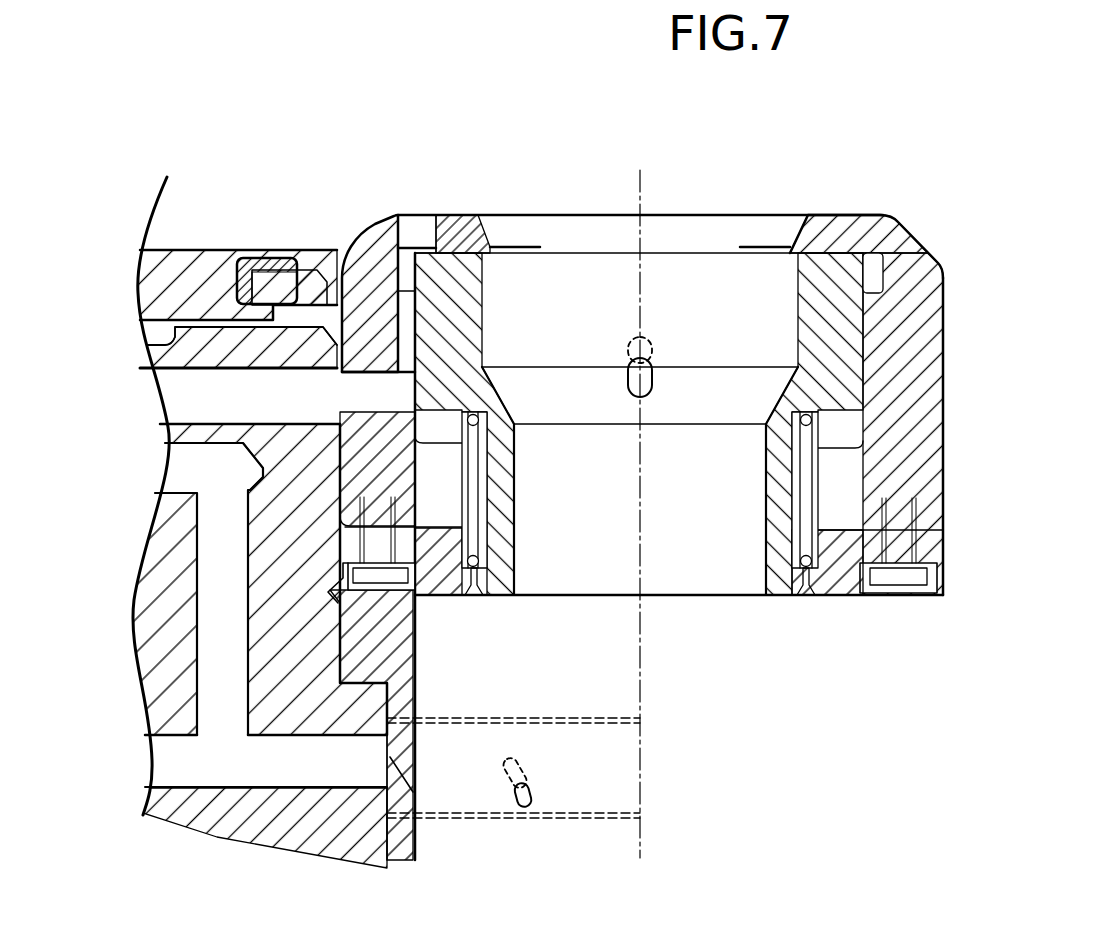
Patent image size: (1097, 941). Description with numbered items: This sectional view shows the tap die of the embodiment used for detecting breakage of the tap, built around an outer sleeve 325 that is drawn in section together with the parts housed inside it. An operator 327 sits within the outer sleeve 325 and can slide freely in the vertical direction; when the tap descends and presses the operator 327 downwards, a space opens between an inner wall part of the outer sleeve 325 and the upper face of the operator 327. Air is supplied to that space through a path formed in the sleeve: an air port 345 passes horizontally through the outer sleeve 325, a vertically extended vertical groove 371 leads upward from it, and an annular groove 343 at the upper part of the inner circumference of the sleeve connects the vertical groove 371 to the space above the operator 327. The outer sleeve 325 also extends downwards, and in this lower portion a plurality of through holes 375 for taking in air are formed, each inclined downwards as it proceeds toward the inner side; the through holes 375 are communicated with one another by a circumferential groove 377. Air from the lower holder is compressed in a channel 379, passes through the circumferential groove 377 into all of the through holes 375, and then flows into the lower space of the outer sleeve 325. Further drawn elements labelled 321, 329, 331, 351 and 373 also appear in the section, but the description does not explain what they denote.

The housing body 321 is at (940, 401).
The outer sleeve 325 is at (881, 218).
The operator 327 is at (477, 257).
The bottom plate 329 is at (837, 582).
The bearing 331 is at (466, 504).
The annular groove 343 is at (873, 270).
The air port 345 is at (384, 400).
The arm member 351 is at (178, 392).
The vertical groove 371 is at (394, 308).
The hole 373 is at (640, 397).
The through holes 375 is at (413, 798).
The circumferential groove 377 is at (632, 792).
The channel 379 is at (282, 778).